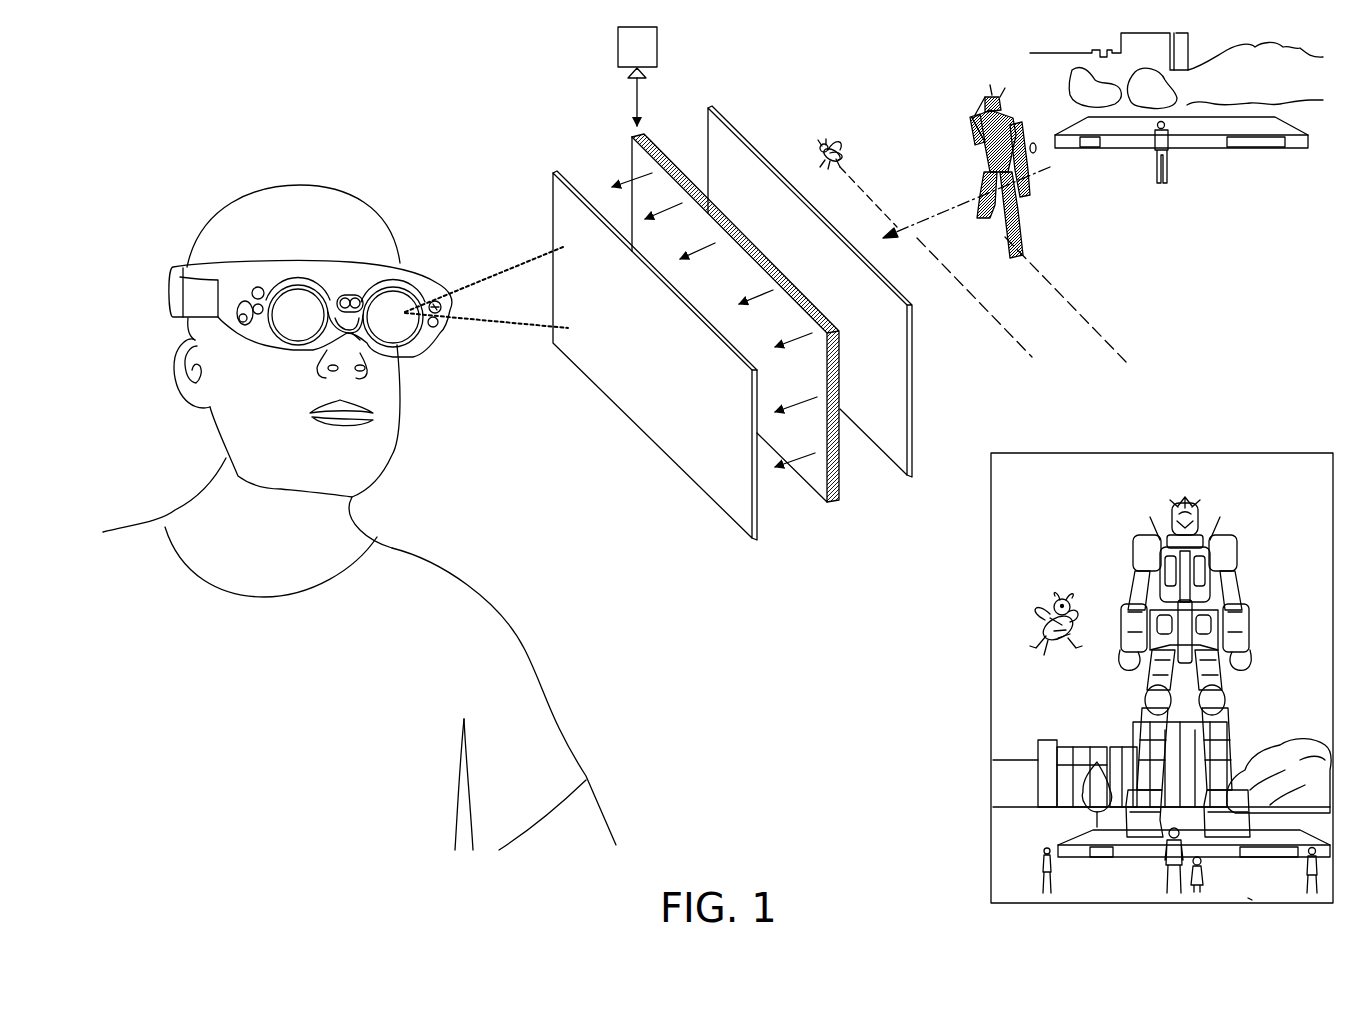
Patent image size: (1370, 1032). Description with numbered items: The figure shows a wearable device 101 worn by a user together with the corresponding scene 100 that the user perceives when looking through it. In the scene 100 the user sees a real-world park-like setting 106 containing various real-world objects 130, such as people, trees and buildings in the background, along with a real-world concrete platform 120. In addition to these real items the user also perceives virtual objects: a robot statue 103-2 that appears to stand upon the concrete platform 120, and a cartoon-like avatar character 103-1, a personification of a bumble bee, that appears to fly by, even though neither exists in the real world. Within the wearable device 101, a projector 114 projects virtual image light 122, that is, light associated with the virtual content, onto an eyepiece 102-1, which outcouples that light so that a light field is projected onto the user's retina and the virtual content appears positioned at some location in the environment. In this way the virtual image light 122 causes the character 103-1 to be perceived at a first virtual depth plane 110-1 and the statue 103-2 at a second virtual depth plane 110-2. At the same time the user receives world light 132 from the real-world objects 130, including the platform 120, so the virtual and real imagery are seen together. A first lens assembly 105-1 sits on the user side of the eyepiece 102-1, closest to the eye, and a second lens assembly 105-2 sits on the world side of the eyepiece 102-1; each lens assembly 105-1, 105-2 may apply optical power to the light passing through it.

The scene 100 is at (1150, 482).
The wearable device 101 is at (302, 267).
The eyepiece 102-1 is at (833, 503).
The cartoon-like avatar character 103-1 is at (833, 137).
The robot statue 103-2 is at (1022, 213).
The first lens assembly 105-1 is at (753, 540).
The second lens assembly 105-2 is at (913, 390).
The real-world park-like setting 106 is at (1248, 898).
The first virtual depth plane 110-1 is at (1027, 350).
The second virtual depth plane 110-2 is at (1097, 337).
The projector 114 is at (618, 43).
The real-world concrete platform 120 is at (1082, 838).
The virtual image light 122 is at (631, 150).
The real-world objects 130 is at (1163, 183).
The world light 132 is at (940, 217).